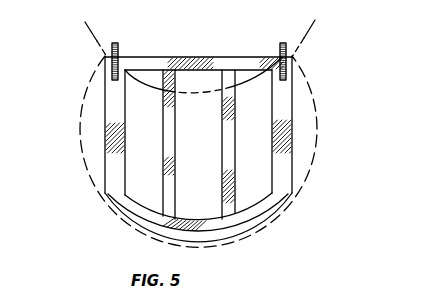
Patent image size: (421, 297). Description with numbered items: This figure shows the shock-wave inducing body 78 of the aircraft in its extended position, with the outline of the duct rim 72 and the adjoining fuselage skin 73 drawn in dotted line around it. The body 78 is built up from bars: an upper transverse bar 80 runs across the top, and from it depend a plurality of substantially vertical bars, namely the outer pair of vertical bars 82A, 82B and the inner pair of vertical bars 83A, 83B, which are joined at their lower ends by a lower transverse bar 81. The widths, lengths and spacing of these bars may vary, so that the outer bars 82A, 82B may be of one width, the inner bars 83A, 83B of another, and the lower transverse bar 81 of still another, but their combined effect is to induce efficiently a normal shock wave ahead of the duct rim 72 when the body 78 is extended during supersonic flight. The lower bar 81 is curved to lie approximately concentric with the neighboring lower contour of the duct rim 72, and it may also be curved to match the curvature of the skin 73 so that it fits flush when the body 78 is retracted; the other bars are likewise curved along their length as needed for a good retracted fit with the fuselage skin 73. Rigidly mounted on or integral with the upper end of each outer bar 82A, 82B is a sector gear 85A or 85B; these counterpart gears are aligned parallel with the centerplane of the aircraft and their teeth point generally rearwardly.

The forward-end rim or edge of air duct 72 is at (312, 170).
The fuselage skin 73 is at (315, 20).
The shock-wave inducing body 78 is at (105, 137).
The upper transverse bar 80 is at (192, 56).
The lower transverse bar 81 is at (120, 208).
The outer vertical bar 82A is at (292, 117).
The outer vertical bar 82B is at (105, 93).
The inner vertical bar 83A is at (235, 182).
The inner vertical bar 83B is at (176, 152).
The sector gear 85A is at (281, 44).
The sector gear 85B is at (117, 44).